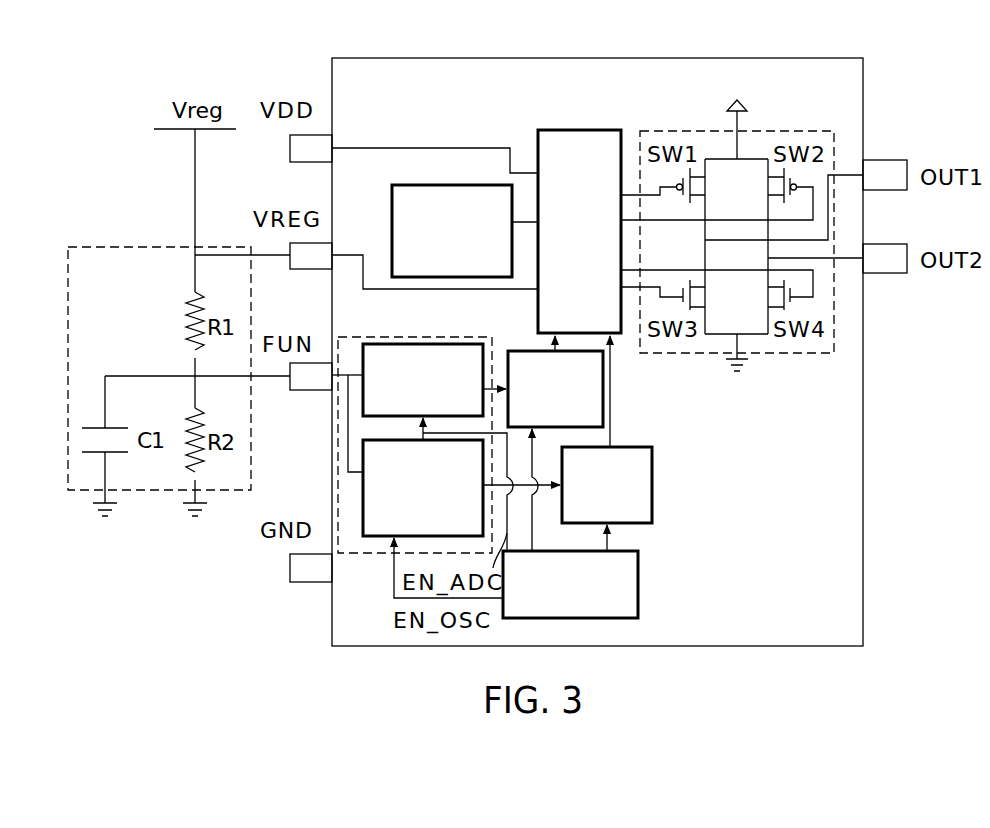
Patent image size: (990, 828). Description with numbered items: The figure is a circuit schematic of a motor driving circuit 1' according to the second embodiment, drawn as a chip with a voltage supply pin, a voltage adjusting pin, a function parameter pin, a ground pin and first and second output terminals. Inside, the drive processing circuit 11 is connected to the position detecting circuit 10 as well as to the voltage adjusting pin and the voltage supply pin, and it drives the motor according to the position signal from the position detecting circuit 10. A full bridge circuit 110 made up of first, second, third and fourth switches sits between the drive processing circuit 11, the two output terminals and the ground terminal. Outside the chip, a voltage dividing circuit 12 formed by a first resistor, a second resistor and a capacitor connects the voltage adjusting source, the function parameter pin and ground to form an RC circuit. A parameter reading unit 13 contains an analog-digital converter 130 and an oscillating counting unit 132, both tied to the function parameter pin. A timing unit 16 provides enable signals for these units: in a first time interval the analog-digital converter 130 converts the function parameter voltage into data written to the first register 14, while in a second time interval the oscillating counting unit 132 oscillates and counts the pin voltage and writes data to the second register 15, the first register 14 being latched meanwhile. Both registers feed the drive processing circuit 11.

The motor driving circuit 1' is at (475, 339).
The position detecting circuit 10 is at (392, 216).
The drive processing circuit 11 is at (576, 130).
The voltage dividing circuit 12 is at (88, 246).
The parameter reading unit 13 is at (334, 439).
The first register 14 is at (603, 386).
The second register 15 is at (652, 483).
The timing unit 16 is at (638, 583).
The full bridge circuit 110 is at (675, 130).
The analog-digital converter 130 is at (421, 343).
The oscillating counting unit 132 is at (363, 494).